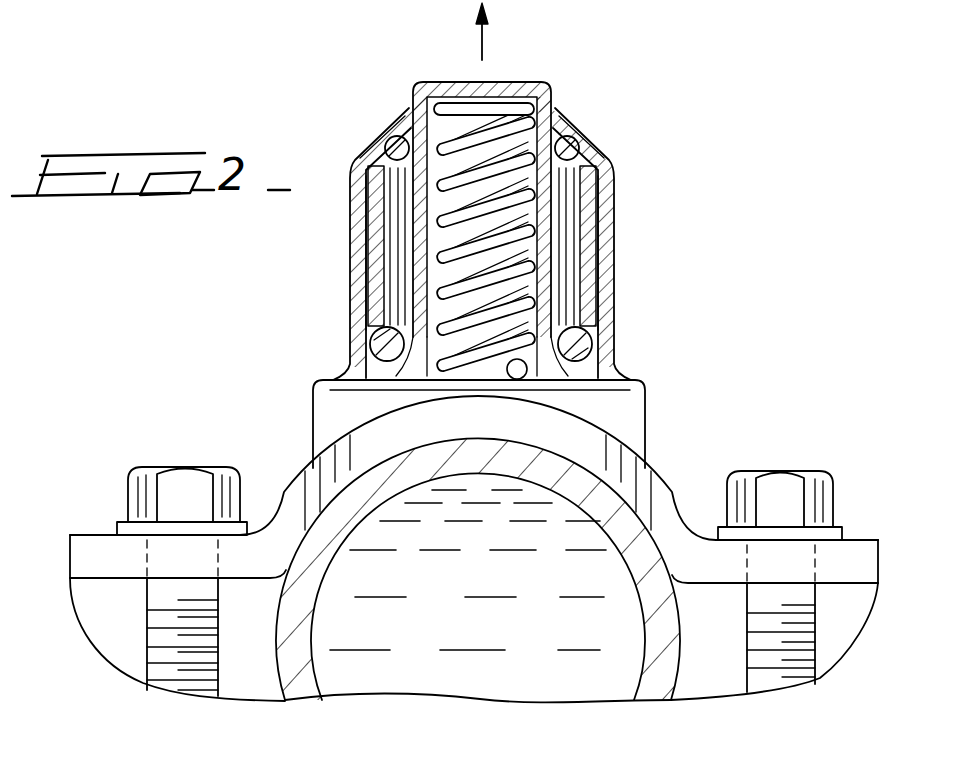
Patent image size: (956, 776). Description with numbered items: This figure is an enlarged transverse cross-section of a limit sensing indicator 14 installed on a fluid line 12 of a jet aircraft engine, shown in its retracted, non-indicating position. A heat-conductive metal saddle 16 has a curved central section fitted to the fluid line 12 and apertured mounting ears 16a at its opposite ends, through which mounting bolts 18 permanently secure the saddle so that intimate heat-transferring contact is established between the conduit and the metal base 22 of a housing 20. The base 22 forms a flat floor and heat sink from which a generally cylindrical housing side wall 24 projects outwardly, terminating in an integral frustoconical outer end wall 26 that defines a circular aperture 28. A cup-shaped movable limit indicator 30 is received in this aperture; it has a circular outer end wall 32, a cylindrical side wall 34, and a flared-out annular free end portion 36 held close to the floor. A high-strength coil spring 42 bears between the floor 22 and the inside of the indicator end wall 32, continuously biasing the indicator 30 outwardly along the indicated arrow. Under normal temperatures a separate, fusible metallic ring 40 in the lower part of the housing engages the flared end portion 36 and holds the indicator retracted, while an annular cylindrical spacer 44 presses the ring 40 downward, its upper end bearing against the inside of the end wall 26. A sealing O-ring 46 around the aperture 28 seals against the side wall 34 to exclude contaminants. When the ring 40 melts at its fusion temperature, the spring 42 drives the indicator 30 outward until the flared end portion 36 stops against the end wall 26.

The fluid line 12 is at (690, 638).
The limit sensing indicator 14 is at (618, 337).
The saddle 16 is at (638, 477).
The mounting ears 16a is at (857, 557).
The mounting bolts 18 is at (787, 477).
The housing 20 is at (638, 406).
The base 22 is at (452, 370).
The housing side wall 24 is at (607, 290).
The outer end wall 26 is at (570, 130).
The circular aperture 28 is at (563, 112).
The limit indicator 30 is at (489, 77).
The outer end wall 32 is at (467, 90).
The side wall 34 is at (410, 215).
The flared end portion 36 is at (394, 358).
The fusible ring 40 is at (583, 328).
The coil spring 42 is at (523, 180).
The spacer 44 is at (583, 259).
The O-ring 46 is at (583, 160).